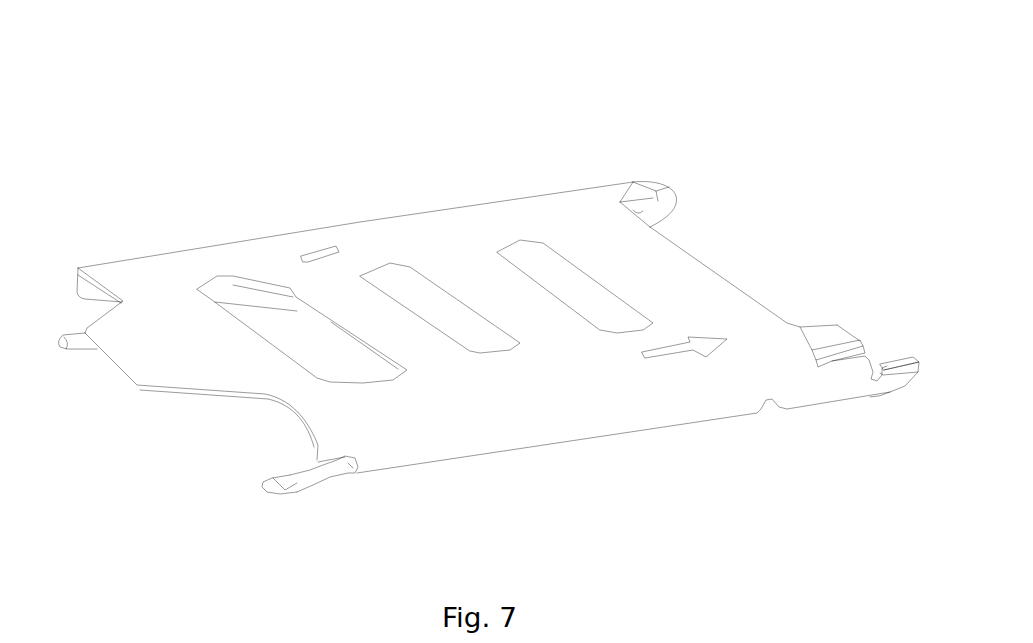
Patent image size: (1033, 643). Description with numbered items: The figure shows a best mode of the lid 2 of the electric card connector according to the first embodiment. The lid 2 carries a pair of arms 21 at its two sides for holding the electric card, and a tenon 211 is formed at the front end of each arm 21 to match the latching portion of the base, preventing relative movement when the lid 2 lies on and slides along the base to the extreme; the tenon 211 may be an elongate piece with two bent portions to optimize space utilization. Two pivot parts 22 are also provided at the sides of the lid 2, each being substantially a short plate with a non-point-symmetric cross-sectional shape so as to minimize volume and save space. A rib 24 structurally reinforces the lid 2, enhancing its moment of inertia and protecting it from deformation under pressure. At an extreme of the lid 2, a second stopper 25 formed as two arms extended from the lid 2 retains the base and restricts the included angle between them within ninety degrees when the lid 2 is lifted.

The lid 2 is at (29, 50).
The arm 21 is at (347, 475).
The tenon 211 is at (285, 497).
The pivot part 22 is at (898, 383).
The rib 24 is at (230, 297).
The second stopper 25 is at (833, 336).